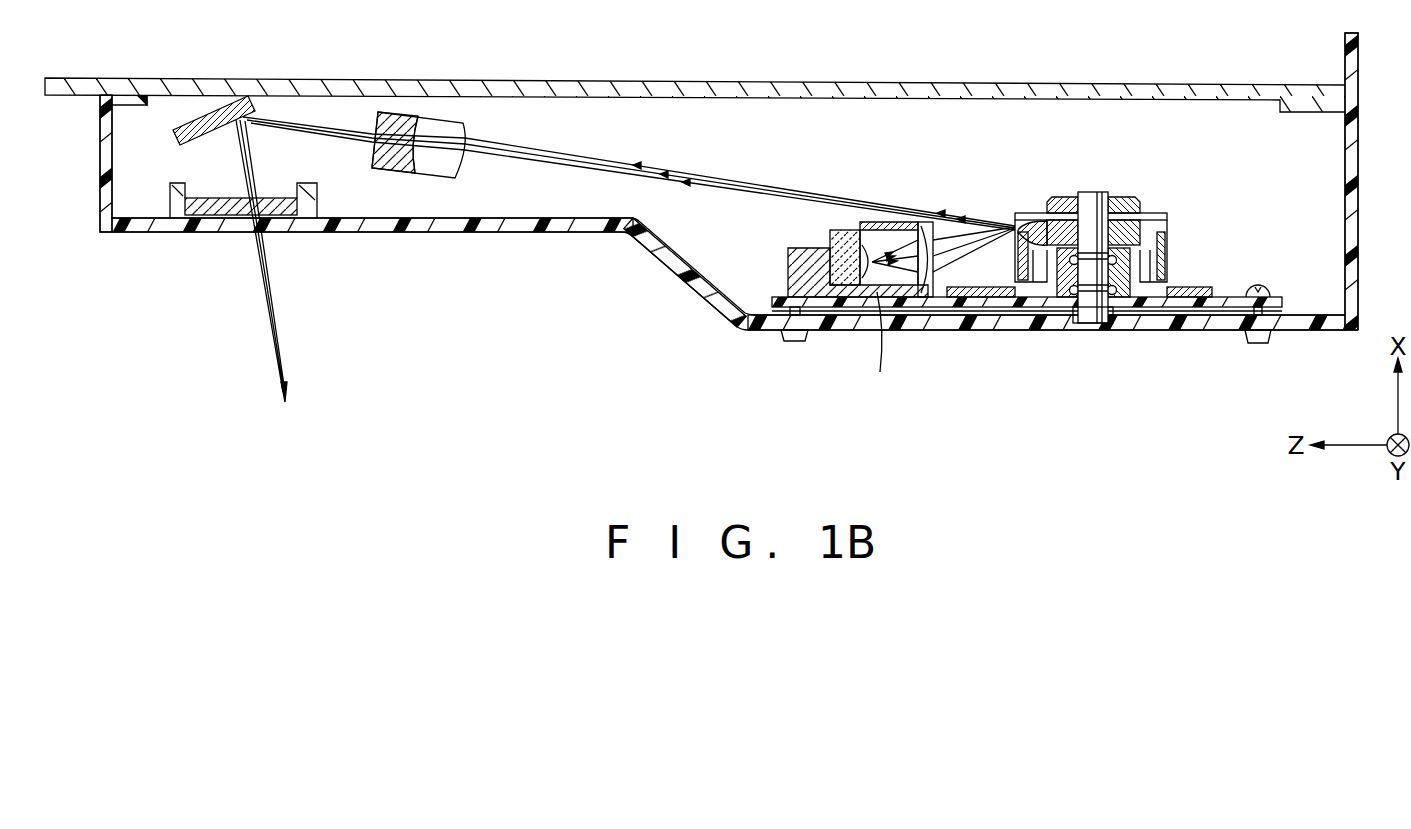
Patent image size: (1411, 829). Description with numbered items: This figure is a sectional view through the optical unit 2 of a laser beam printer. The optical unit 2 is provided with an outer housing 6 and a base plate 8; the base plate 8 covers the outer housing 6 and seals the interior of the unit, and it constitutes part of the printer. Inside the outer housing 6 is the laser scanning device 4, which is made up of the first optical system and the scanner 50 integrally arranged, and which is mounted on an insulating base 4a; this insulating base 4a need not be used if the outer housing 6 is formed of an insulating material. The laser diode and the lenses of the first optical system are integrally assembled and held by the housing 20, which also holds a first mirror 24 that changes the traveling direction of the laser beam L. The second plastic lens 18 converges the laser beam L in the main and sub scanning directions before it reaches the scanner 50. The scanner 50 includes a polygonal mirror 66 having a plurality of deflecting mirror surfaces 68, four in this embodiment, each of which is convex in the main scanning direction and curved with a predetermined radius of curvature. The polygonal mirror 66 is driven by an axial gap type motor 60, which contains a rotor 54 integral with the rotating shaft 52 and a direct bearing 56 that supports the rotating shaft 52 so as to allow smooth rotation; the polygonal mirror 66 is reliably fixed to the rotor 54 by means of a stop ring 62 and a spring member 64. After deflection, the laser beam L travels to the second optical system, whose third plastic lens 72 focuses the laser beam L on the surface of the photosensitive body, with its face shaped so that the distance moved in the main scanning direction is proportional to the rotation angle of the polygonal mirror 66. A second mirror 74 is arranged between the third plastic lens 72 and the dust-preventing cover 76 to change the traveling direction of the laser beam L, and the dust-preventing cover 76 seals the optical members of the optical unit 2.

The optical unit 2 is at (1174, 74).
The laser scanning device 4 is at (1288, 285).
The insulating base 4a is at (1244, 293).
The outer housing 6 is at (548, 233).
The base plate 8 is at (826, 82).
The second plastic lens 18 is at (925, 222).
The housing 20 is at (792, 248).
The first mirror 24 is at (868, 222).
The scanner 50 is at (1111, 267).
The rotating shaft 52 is at (1090, 192).
The rotor 54 is at (1022, 257).
The direct bearing 56 is at (1063, 306).
The axial gap type motor 60 is at (1195, 272).
The stop ring 62 is at (1120, 199).
The spring member 64 is at (1050, 213).
The polygonal mirror 66 is at (1019, 214).
The deflecting mirror surface 68 is at (1169, 240).
The third plastic lens 72 is at (437, 122).
The second mirror 74 is at (190, 120).
The dust-preventing cover 76 is at (200, 220).
The laser beam L is at (551, 164).